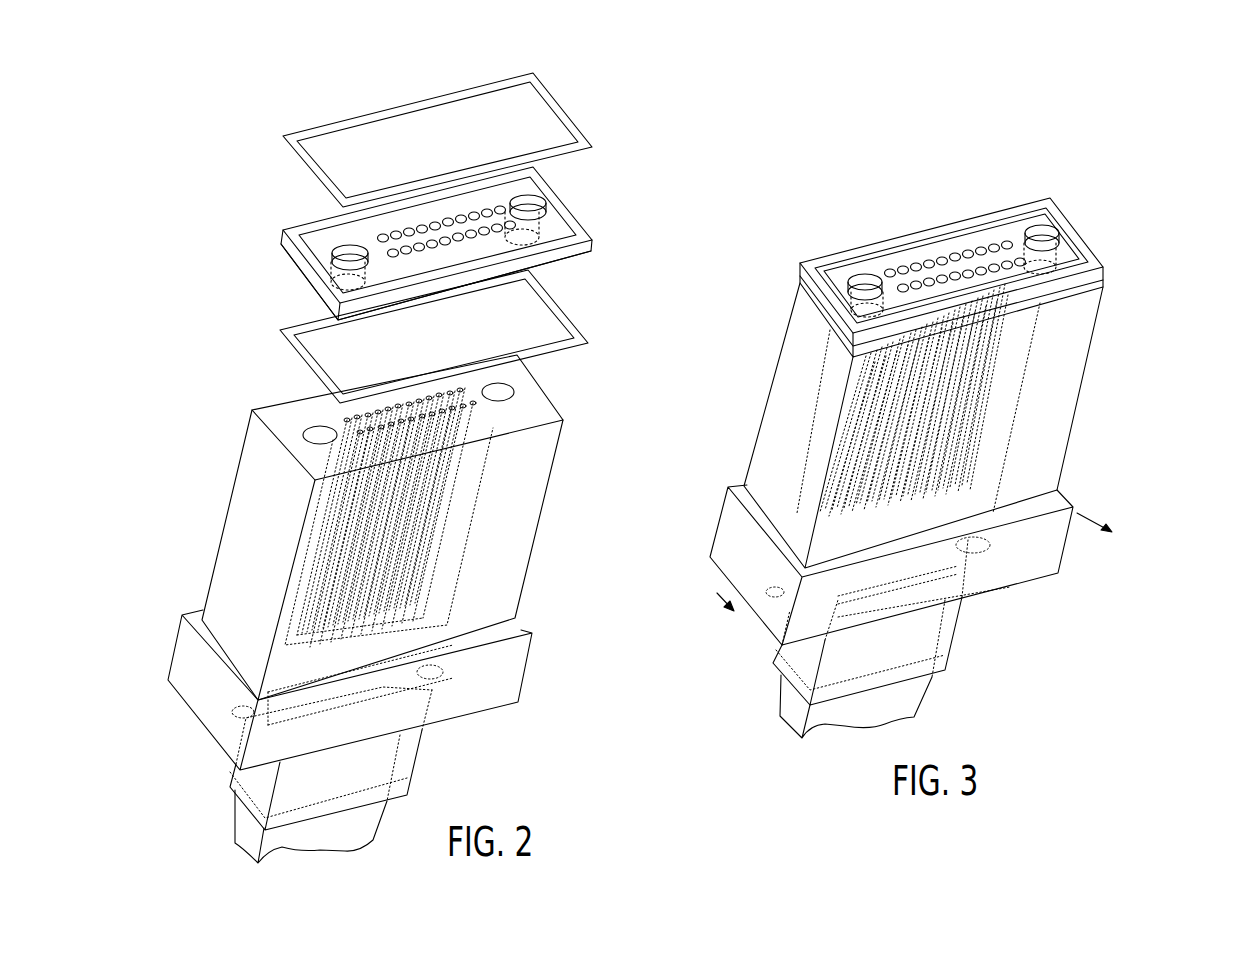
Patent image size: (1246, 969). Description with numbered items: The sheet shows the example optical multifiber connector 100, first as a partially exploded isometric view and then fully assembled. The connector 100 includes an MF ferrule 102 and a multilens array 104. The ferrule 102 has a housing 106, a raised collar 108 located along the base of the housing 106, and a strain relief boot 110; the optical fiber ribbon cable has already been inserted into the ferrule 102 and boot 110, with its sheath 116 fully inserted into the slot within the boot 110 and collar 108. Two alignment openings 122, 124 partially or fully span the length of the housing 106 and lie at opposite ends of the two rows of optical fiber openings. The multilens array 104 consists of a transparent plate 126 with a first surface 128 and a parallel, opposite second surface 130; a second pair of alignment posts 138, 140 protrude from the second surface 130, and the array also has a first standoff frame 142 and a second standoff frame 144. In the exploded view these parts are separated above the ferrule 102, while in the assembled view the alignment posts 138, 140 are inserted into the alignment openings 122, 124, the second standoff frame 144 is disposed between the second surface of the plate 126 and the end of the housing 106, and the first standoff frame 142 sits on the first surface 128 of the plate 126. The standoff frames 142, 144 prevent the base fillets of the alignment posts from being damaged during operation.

In FIG. 2, the optical multifiber connector 100 is at (217, 133).
In FIG. 3, the optical multifiber connector 100 is at (1083, 160).
In FIG. 2, the MF ferrule 102 is at (552, 524).
In FIG. 3, the MF ferrule 102 is at (1098, 399).
In FIG. 2, the multilens array 104 is at (684, 174).
In FIG. 2, the housing 106 is at (240, 523).
In FIG. 3, the housing 106 is at (909, 425).
In FIG. 2, the raised collar 108 is at (187, 683).
In FIG. 3, the raised collar 108 is at (718, 555).
In FIG. 2, the strain relief boot 110 is at (413, 765).
In FIG. 3, the strain relief boot 110 is at (955, 637).
In FIG. 2, the sheath 116 is at (247, 830).
In FIG. 3, the sheath 116 is at (779, 700).
In FIG. 3, the alignment opening 122 is at (818, 455).
In FIG. 3, the alignment opening 124 is at (1000, 452).
In FIG. 2, the transparent plate 126 is at (283, 240).
In FIG. 3, the transparent plate 126 is at (800, 280).
In FIG. 2, the first surface 128 is at (432, 243).
In FIG. 3, the first surface 128 is at (950, 250).
In FIG. 2, the second surface 130 is at (567, 258).
In FIG. 3, the alignment post 138 is at (863, 310).
In FIG. 3, the alignment post 140 is at (1048, 267).
In FIG. 3, the first standoff frame 142 is at (1025, 212).
In FIG. 2, the second standoff frame 144 is at (558, 100).
In FIG. 3, the second standoff frame 144 is at (1095, 288).